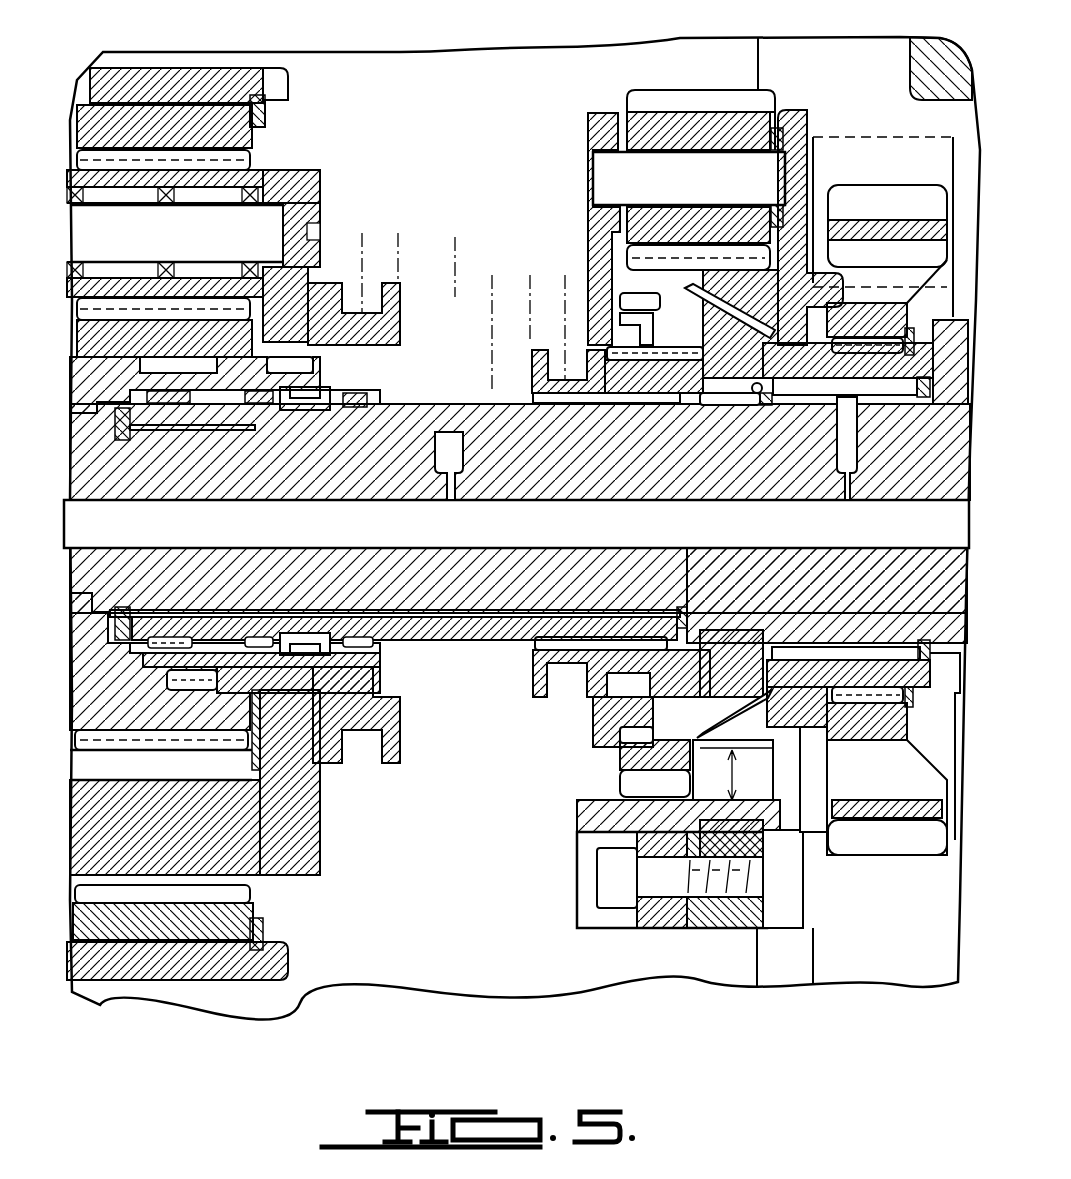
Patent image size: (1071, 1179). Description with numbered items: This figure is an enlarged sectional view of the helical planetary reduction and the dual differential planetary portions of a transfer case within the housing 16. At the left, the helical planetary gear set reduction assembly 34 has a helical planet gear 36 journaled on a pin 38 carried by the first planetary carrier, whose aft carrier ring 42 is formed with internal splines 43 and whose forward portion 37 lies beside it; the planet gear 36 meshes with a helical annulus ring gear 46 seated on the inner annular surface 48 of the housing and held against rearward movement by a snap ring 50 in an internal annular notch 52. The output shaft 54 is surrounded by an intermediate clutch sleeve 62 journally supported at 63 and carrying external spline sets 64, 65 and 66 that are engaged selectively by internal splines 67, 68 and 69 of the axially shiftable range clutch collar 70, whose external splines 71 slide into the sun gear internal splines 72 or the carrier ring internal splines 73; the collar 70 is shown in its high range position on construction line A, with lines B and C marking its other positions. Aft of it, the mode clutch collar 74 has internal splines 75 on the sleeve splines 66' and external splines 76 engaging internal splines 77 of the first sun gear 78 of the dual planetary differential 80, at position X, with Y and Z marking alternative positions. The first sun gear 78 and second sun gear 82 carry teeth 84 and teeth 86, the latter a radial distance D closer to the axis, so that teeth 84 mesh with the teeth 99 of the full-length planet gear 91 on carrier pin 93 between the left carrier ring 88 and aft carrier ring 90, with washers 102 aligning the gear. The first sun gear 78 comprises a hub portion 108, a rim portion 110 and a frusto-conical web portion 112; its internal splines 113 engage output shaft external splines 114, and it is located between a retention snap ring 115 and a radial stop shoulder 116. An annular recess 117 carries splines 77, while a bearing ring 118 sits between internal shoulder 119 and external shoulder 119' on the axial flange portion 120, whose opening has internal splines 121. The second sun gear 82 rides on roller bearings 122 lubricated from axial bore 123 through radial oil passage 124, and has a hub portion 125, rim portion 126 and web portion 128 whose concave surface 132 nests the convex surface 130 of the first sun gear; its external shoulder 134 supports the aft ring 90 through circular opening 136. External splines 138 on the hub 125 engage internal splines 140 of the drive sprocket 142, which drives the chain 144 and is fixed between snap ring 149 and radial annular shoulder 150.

The housing 16 is at (930, 62).
The helical planetary gear set reduction assembly 34 is at (400, 118).
The helical planet gear 36 is at (240, 177).
The bearing 37 is at (245, 325).
The pin 38 is at (322, 207).
The aft carrier ring 42 is at (322, 180).
The internal splines 43 is at (333, 400).
The helical annulus ring gear 46 is at (240, 138).
The inner annular surface 48 is at (208, 108).
The snap ring 50 is at (266, 107).
The internal annular notch 52 is at (255, 952).
The output shaft 54 is at (498, 597).
The intermediate clutch sleeve 62 is at (498, 410).
The journal support 63 is at (488, 440).
The external splines 64 is at (213, 432).
The external splines 65 is at (308, 412).
The external splines 66 is at (456, 380).
The sleeve external splines 66' is at (633, 451).
The internal splines 67 is at (168, 405).
The internal splines 68 is at (262, 405).
The internal splines 69 is at (357, 408).
The range clutch collar 70 is at (372, 393).
The external splines 71 is at (237, 373).
The internal splines 72 is at (150, 364).
The internal splines 73 is at (292, 366).
The mode clutch collar 74 is at (545, 354).
The internal splines 75 is at (540, 407).
The external splines 76 is at (642, 407).
The internal splines 77 is at (645, 330).
The first sun gear 78 is at (612, 262).
The dual planetary differential 80 is at (840, 100).
The second sun gear 82 is at (794, 284).
The gear teeth 84 is at (698, 210).
The gear teeth 86 is at (712, 280).
The left carrier ring 88 is at (603, 122).
The aft carrier ring 90 is at (788, 120).
The full-length planet gear 91 is at (708, 104).
The carrier pin 93 is at (600, 176).
The gear teeth 99 is at (660, 92).
The washers 102 is at (596, 134).
The hub portion 108 is at (740, 407).
The rim portion 110 is at (643, 272).
The web portion 112 is at (705, 296).
The internal splines 113 is at (785, 398).
The external splines 114 is at (726, 412).
The retention snap ring 115 is at (692, 412).
The radial stop shoulder 116 is at (848, 360).
The annular recess 117 is at (654, 370).
The bearing ring 118 is at (620, 298).
The internal annular shoulder 119 is at (670, 289).
The external annular shoulder 119' is at (592, 315).
The axial flange portion 120 is at (600, 325).
The internal splines 121 is at (585, 405).
The roller bearings 122 is at (905, 392).
The axial bore 123 is at (727, 500).
The radial oil passage 124 is at (860, 452).
The hub portion 125 is at (926, 388).
The rim portion 126 is at (722, 300).
The web portion 128 is at (748, 380).
The convex frusto-conical surface 130 is at (740, 713).
The concave frusto-conical surface 132 is at (710, 722).
The external shoulder 134 is at (780, 355).
The circular opening 136 is at (842, 306).
The external splines 138 is at (855, 396).
The internal splines 140 is at (852, 338).
The drive sprocket 142 is at (884, 188).
The chain 144 is at (902, 128).
The snap ring 149 is at (910, 330).
The radial annular shoulder 150 is at (827, 708).
The radial distance D is at (736, 774).
The construction line A is at (356, 261).
The plane B is at (395, 246).
The plane C is at (452, 253).
The construction line X is at (564, 315).
The plane Y is at (528, 295).
The plane Z is at (490, 320).